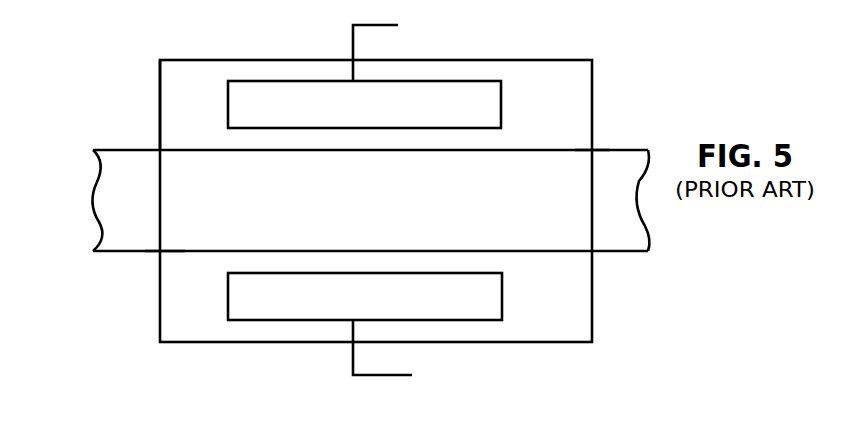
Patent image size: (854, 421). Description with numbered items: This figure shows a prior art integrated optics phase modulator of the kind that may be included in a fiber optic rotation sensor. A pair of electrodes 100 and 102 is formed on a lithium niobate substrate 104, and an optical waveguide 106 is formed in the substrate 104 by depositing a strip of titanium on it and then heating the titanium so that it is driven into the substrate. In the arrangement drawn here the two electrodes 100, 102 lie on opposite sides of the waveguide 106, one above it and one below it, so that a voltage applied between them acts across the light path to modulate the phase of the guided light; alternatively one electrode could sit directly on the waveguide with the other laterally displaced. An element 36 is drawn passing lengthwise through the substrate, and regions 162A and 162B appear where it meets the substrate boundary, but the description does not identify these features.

The tube 36 is at (115, 150).
The electrode 100 is at (453, 320).
The electrode 102 is at (503, 91).
The lithium niobate substrate 104 is at (592, 308).
The optical waveguide 106 is at (183, 150).
The upper opening 162A is at (590, 161).
The lower opening 162B is at (163, 228).